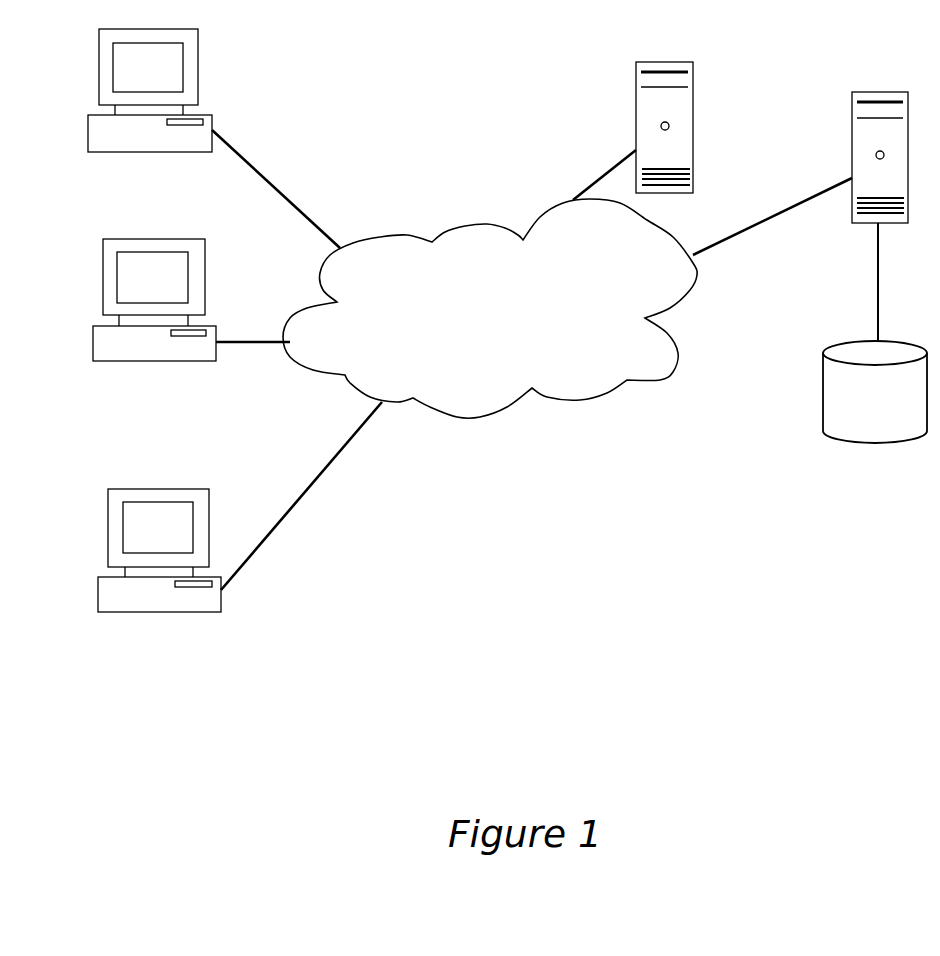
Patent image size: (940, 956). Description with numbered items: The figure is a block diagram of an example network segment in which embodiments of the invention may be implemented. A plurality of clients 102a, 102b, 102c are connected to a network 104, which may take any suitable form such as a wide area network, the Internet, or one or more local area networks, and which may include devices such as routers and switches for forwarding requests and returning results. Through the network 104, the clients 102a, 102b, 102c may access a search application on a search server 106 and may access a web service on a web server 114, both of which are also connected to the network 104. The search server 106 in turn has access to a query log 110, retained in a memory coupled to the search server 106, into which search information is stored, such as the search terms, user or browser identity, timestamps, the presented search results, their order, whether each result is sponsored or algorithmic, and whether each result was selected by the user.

The client 102a is at (91, 122).
The client 102b is at (97, 333).
The client 102c is at (101, 584).
The network 104 is at (490, 308).
The web server 114 is at (637, 115).
The search server 106 is at (852, 145).
The query log 110 is at (826, 345).